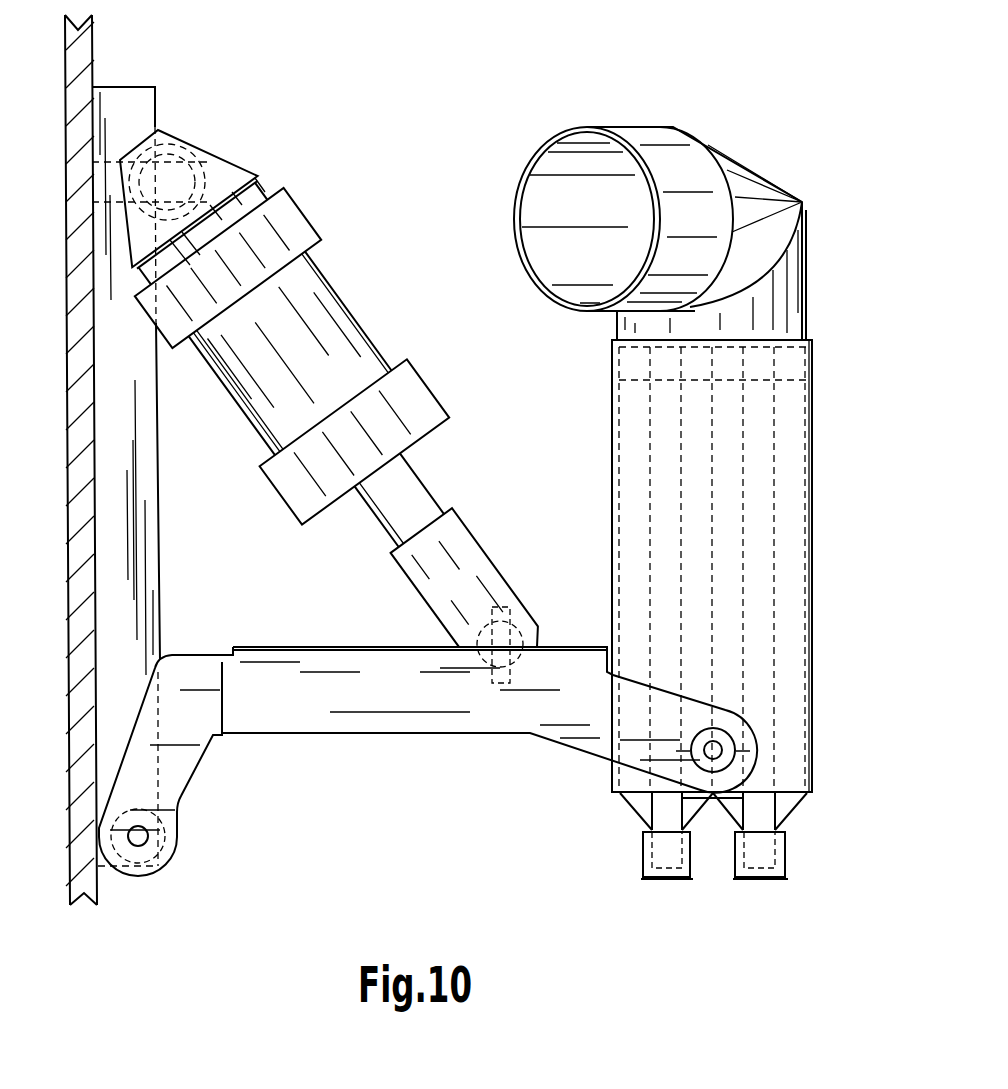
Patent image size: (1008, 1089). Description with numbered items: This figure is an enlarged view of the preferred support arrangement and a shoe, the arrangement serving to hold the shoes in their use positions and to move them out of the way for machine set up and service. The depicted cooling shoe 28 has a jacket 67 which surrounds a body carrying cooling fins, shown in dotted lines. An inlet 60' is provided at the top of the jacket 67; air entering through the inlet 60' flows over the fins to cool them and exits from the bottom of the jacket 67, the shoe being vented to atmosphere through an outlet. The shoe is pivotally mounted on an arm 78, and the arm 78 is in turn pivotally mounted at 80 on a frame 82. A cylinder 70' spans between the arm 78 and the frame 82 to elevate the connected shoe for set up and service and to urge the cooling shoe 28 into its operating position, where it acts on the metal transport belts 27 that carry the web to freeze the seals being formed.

The metal transport belt 27 is at (678, 880).
The cooling shoe 28 is at (758, 522).
The inlet 60' is at (658, 188).
The jacket 67 is at (813, 412).
The cylinder 70' is at (329, 406).
The arm 78 is at (330, 712).
The pivot 80 is at (142, 835).
The frame 82 is at (140, 515).